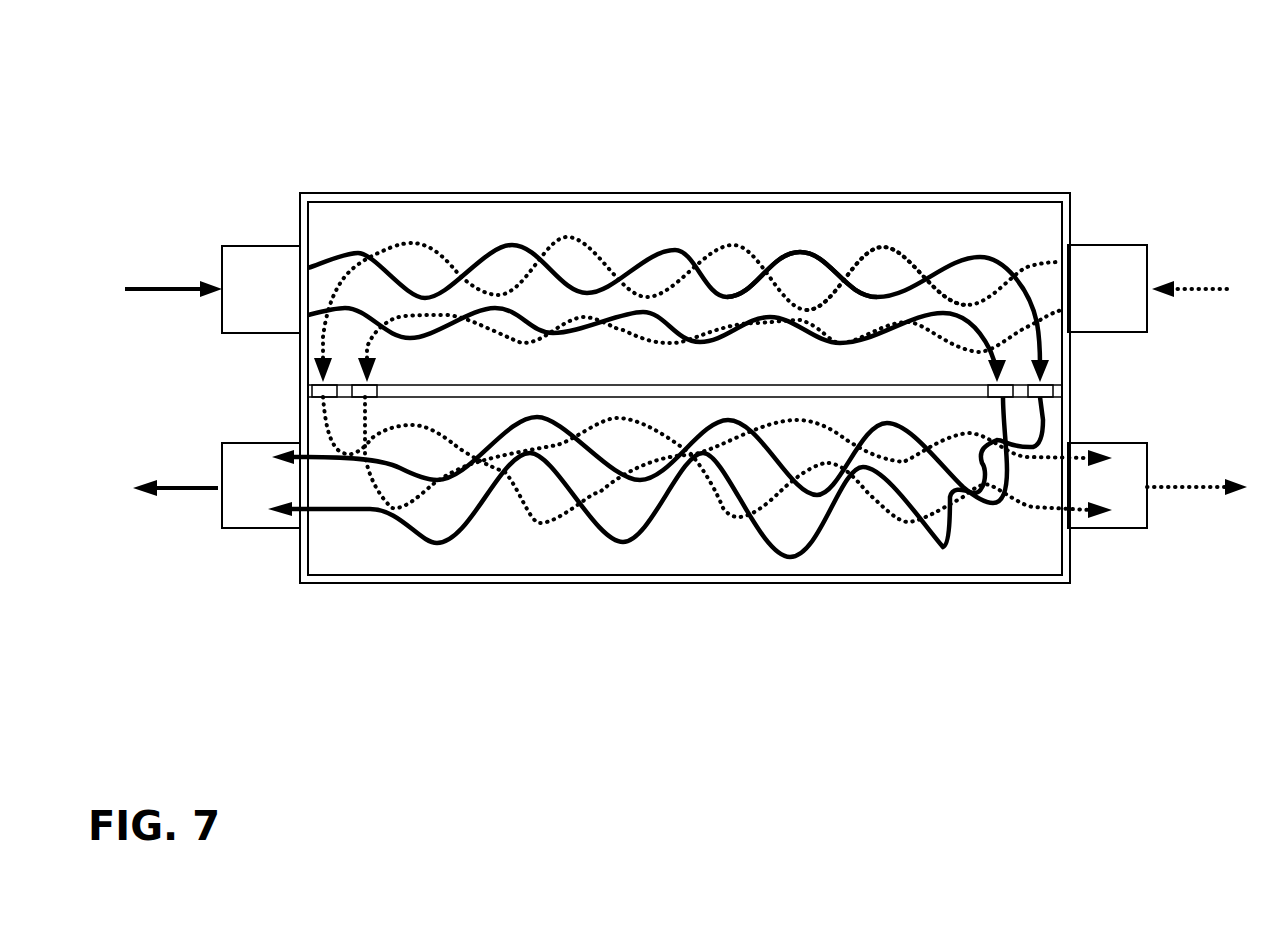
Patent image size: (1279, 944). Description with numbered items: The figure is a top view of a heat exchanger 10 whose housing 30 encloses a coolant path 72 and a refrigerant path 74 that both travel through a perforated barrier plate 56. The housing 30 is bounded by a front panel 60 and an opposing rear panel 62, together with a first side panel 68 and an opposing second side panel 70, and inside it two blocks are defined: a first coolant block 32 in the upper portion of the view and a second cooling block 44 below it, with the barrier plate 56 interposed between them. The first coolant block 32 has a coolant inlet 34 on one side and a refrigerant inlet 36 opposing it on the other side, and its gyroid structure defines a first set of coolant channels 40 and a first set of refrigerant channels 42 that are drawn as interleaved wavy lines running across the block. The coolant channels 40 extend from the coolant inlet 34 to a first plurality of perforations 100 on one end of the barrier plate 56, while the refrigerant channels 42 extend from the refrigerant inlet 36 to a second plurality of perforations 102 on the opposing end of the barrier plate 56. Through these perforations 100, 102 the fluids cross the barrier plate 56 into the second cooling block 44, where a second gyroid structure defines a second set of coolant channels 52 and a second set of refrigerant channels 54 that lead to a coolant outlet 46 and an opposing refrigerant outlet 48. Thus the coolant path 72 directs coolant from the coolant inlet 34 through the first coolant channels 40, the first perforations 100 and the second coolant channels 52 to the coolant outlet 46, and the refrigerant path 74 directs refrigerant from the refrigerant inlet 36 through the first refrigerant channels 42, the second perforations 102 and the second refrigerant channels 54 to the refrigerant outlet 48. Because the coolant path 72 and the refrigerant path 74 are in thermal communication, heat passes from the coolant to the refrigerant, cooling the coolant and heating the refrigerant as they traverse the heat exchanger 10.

The heat exchanger 10 is at (318, 124).
The housing 30 is at (475, 192).
The first coolant block 32 is at (504, 222).
The coolant inlet 34 is at (247, 250).
The refrigerant inlet 36 is at (1114, 263).
The first set of coolant channels 40 is at (352, 250).
The first set of refrigerant channels 42 is at (724, 245).
The second cooling block 44 is at (700, 555).
The coolant outlet 46 is at (243, 518).
The refrigerant outlet 48 is at (1120, 520).
The second set of coolant channels 52 is at (450, 545).
The second set of refrigerant channels 54 is at (893, 520).
The perforated barrier plate 56 is at (967, 387).
The front panel 60 is at (297, 565).
The rear panel 62 is at (1070, 430).
The first side panel 68 is at (598, 193).
The second side panel 70 is at (615, 590).
The coolant path 72 is at (801, 252).
The refrigerant path 74 is at (883, 245).
The first plurality of perforations 100 is at (1053, 393).
The second plurality of perforations 102 is at (306, 386).